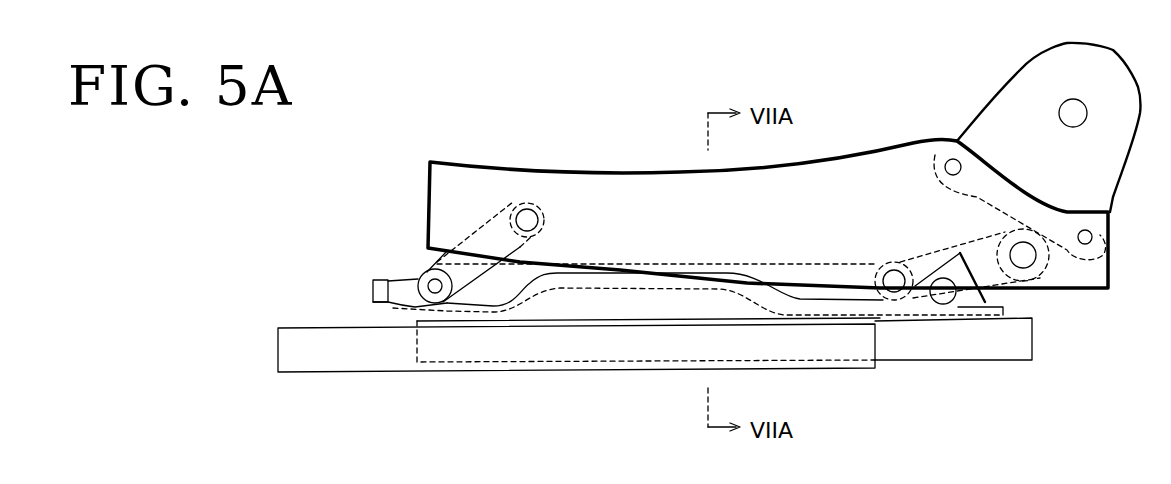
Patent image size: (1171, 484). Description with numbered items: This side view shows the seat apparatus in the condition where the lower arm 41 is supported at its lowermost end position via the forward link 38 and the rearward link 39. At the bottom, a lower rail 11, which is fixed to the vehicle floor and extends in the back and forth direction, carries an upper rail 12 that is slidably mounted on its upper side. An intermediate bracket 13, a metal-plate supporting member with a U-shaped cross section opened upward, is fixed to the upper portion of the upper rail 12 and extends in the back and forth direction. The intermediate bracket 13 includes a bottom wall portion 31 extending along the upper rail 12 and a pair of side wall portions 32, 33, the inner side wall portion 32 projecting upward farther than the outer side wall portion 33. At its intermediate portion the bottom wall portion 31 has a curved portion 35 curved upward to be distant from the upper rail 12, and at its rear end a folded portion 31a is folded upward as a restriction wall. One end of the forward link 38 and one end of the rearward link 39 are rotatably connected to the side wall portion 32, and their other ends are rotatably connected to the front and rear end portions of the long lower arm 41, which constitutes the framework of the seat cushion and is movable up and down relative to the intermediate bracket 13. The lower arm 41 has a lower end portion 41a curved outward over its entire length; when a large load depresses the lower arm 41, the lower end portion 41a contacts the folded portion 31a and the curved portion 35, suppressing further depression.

The lower rail 11 is at (342, 364).
The upper rail 12 is at (1012, 350).
The intermediate bracket 13 is at (398, 262).
The bottom wall portion 31 is at (403, 310).
The folded portion 31a is at (1005, 310).
The side wall portion 32 is at (372, 287).
The side wall portion 33 is at (374, 300).
The curved portion 35 is at (593, 325).
The forward link 38 is at (490, 216).
The rearward link 39 is at (977, 237).
The lower arm 41 is at (630, 185).
The lower end portion 41a is at (1100, 293).